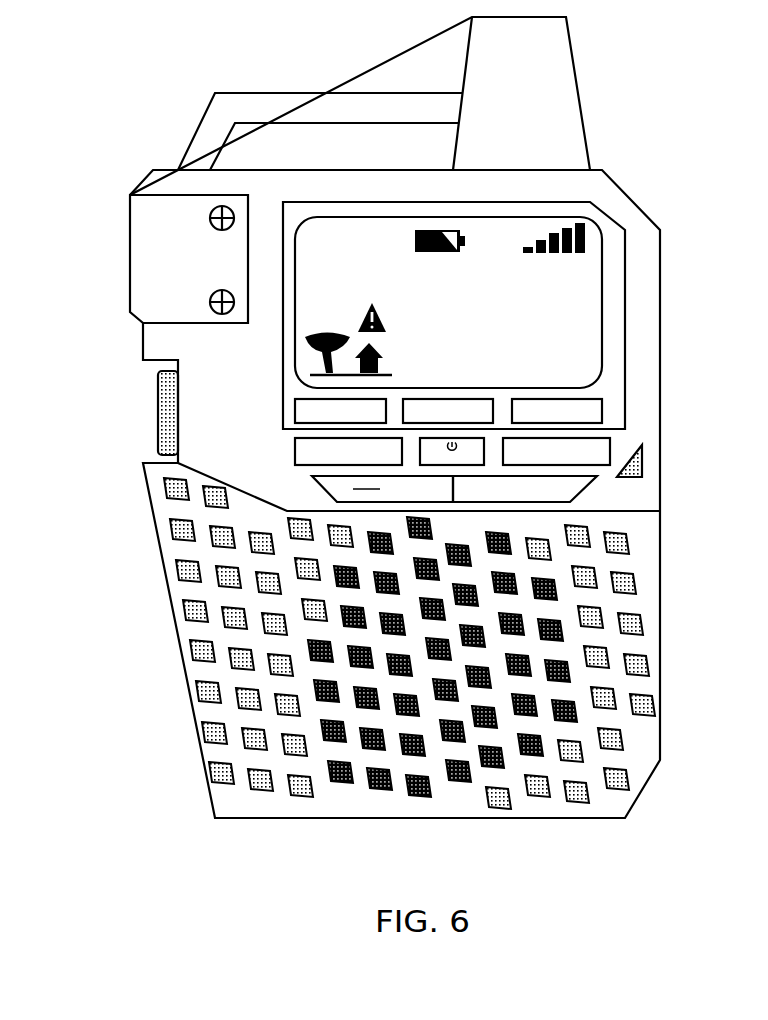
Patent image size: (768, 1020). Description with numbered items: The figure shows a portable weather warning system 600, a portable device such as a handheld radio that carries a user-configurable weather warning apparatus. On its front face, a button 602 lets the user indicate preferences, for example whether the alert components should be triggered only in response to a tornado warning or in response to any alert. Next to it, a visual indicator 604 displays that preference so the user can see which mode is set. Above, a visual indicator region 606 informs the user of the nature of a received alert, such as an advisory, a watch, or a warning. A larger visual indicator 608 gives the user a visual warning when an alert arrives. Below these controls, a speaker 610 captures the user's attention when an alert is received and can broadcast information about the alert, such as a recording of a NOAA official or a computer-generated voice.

The portable weather warning system 600 is at (160, 562).
The button 602 is at (577, 497).
The visual indicator 604 is at (642, 455).
The visual indicator region 606 is at (602, 410).
The visual indicator 608 is at (313, 365).
The speaker 610 is at (330, 727).